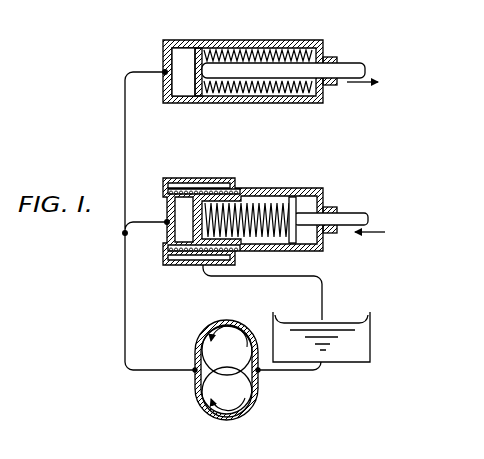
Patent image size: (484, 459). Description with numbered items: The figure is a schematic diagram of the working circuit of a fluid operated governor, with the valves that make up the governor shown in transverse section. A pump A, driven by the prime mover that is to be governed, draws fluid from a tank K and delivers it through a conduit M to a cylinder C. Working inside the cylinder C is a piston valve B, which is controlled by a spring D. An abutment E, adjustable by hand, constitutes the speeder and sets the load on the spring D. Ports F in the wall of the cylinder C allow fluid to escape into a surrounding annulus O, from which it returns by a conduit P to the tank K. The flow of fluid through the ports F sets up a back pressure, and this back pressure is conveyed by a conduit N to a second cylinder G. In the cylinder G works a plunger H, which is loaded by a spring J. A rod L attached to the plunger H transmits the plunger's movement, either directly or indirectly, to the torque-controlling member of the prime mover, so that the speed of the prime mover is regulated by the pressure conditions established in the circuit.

The pump A is at (227, 370).
The piston valve B is at (202, 275).
The cylinder C is at (250, 221).
The spring D is at (264, 203).
The abutment E is at (303, 213).
The ports F is at (200, 257).
The cylinder G is at (187, 72).
The plunger H is at (211, 68).
The spring J is at (287, 56).
The tank K is at (314, 341).
The rod L is at (351, 63).
The conduit M is at (161, 302).
The conduit N is at (146, 153).
The annulus O is at (201, 187).
The conduit P is at (278, 298).